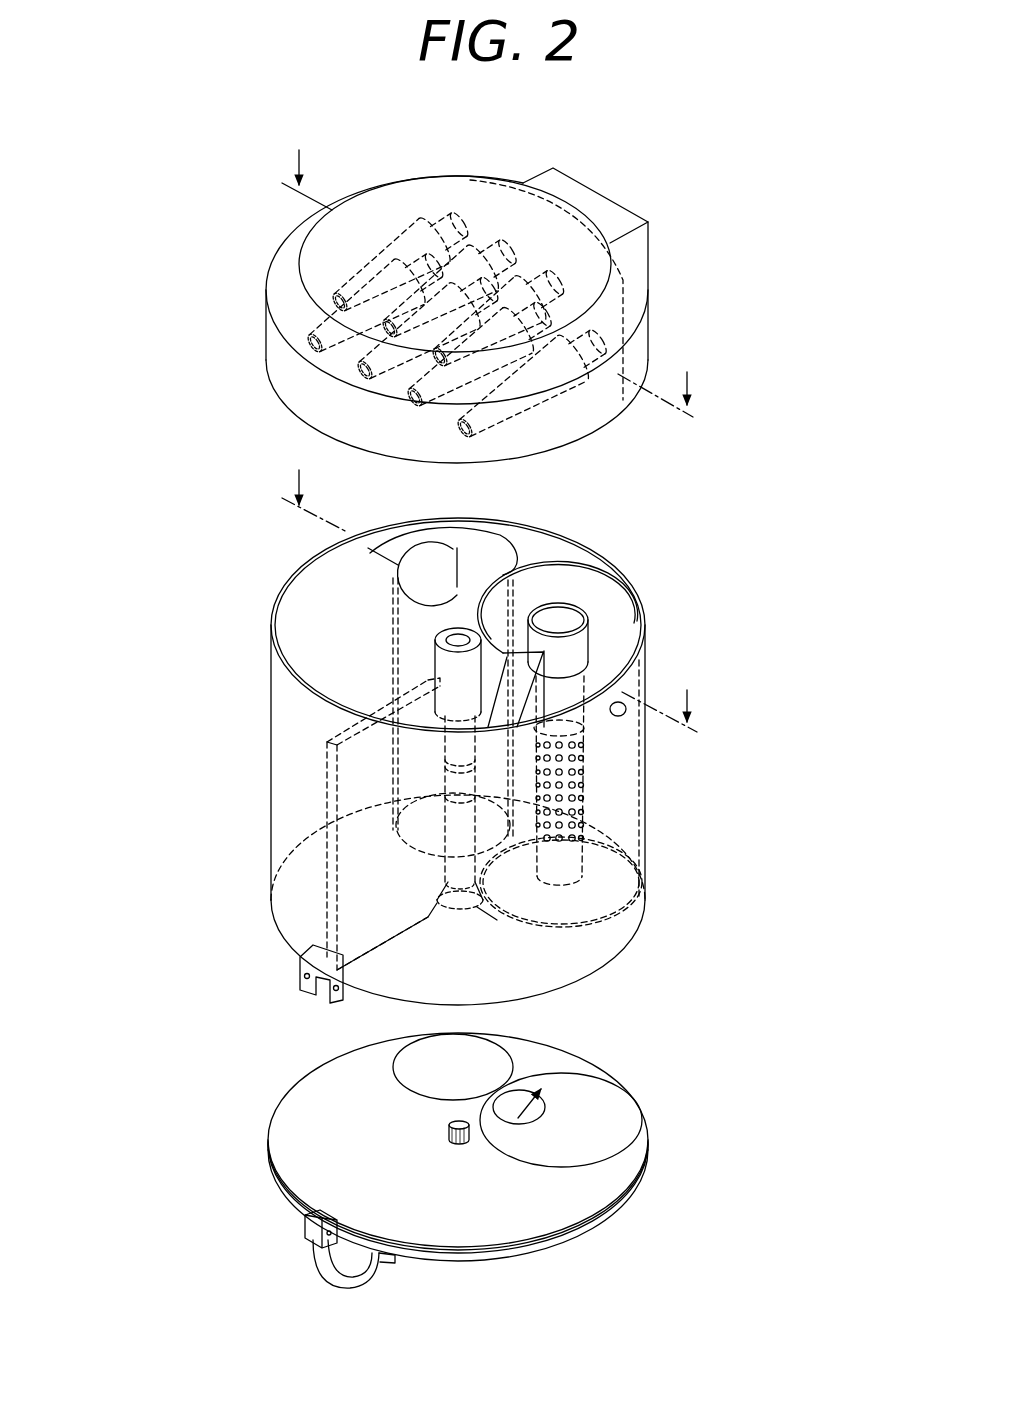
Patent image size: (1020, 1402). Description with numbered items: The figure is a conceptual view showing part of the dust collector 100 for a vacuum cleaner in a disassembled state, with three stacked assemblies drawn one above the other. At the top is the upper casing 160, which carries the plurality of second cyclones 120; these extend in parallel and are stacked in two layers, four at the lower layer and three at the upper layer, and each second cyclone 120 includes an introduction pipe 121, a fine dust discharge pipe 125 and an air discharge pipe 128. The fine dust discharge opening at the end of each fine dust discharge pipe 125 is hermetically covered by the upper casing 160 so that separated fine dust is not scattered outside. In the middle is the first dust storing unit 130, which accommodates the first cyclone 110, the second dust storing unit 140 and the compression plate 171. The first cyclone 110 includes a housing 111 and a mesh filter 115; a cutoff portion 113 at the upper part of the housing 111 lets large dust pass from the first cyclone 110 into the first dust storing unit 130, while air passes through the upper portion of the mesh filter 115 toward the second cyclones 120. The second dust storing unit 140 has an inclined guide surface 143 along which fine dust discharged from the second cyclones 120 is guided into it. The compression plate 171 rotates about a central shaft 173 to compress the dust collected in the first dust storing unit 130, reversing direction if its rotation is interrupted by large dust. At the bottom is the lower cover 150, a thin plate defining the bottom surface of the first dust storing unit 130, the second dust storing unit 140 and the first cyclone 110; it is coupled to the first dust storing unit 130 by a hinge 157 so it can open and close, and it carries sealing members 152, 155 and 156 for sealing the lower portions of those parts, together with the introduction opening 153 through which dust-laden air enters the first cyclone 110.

The dust collector 100 is at (152, 436).
The first cyclone 110 is at (737, 745).
The housing 111 is at (645, 795).
The cutoff portion 113 is at (618, 716).
The mesh filter 115 is at (582, 817).
The second cyclone 120 is at (600, 121).
The introduction pipe 121 is at (537, 283).
The fine dust discharge pipe 125 is at (500, 300).
The air discharge pipe 128 is at (565, 277).
The first dust storing unit 130 is at (273, 758).
The second dust storing unit 140 is at (515, 533).
The guide surface 143 is at (303, 578).
The lower cover 150 is at (515, 1210).
The sealing member 152 is at (577, 1227).
The introduction opening 153 is at (540, 1098).
The sealing member 155 is at (622, 1152).
The sealing member 156 is at (395, 1060).
The hinge 157 is at (307, 1227).
The upper casing 160 is at (288, 272).
The compression plate 171 is at (327, 895).
The central shaft 173 is at (497, 920).